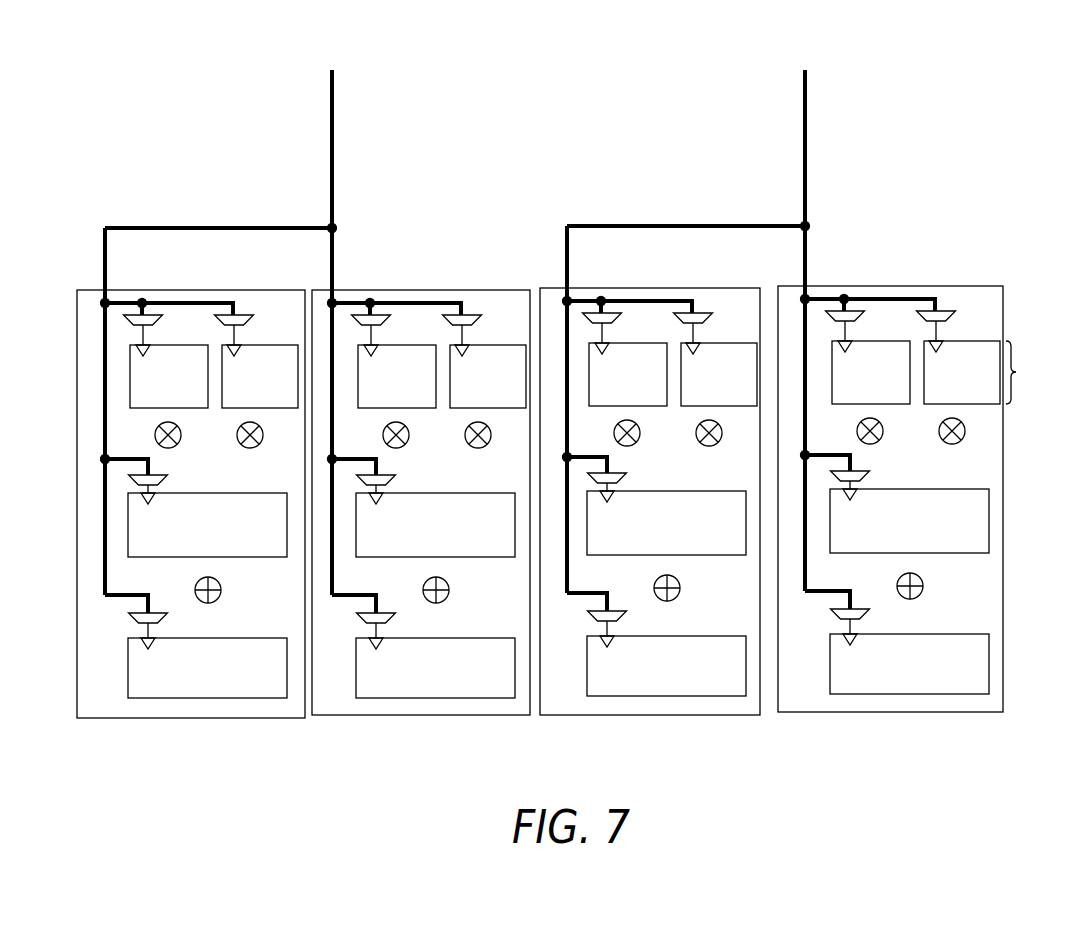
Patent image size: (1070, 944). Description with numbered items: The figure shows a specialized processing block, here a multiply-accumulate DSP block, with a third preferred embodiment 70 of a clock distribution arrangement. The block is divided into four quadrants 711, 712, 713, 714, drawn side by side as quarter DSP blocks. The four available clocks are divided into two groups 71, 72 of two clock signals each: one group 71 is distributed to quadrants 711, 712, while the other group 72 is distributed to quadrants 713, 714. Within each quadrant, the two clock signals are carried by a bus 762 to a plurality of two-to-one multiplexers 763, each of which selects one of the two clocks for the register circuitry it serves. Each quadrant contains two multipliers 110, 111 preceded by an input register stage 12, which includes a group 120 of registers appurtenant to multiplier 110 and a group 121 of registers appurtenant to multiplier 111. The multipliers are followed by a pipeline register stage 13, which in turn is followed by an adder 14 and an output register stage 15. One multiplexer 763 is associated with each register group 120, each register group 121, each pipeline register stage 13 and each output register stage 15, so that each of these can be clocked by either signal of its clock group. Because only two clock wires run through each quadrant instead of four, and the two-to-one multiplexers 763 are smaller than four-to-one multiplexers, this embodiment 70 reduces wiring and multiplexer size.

The third preferred embodiment 70 is at (985, 767).
The group of two clock signals 71 is at (804, 105).
The group of two clock signals 72 is at (331, 105).
The bus 762 is at (334, 252).
The 2:1 multiplexer 763 is at (136, 620).
The input register stage 12 is at (1021, 372).
The pipeline register stage 13 is at (1006, 489).
The output register stage 15 is at (1006, 634).
The adder 14 is at (219, 597).
The multiplier 110 is at (181, 438).
The multiplier 111 is at (250, 448).
The group of registers 120 is at (143, 409).
The group of registers 121 is at (264, 409).
The quadrant 711 is at (950, 712).
The quadrant 712 is at (712, 715).
The quadrant 713 is at (477, 715).
The quadrant 714 is at (250, 718).